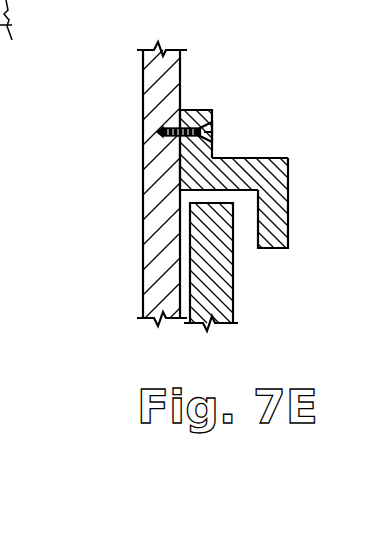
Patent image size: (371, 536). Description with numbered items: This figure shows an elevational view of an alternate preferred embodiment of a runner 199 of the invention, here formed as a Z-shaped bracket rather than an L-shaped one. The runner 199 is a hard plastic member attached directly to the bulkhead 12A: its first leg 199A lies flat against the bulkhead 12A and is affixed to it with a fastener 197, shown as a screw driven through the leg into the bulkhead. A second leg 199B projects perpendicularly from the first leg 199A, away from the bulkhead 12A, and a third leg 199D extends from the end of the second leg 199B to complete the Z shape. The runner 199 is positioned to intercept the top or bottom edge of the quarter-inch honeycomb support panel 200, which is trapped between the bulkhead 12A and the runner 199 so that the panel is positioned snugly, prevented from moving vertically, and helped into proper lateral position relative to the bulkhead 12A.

The bulkhead 12A is at (145, 220).
The fastener 197 is at (209, 132).
The runner 199 is at (264, 160).
The first leg 199A is at (192, 108).
The second leg 199B is at (255, 158).
The third leg 199D is at (289, 212).
The support panel 200 is at (234, 268).